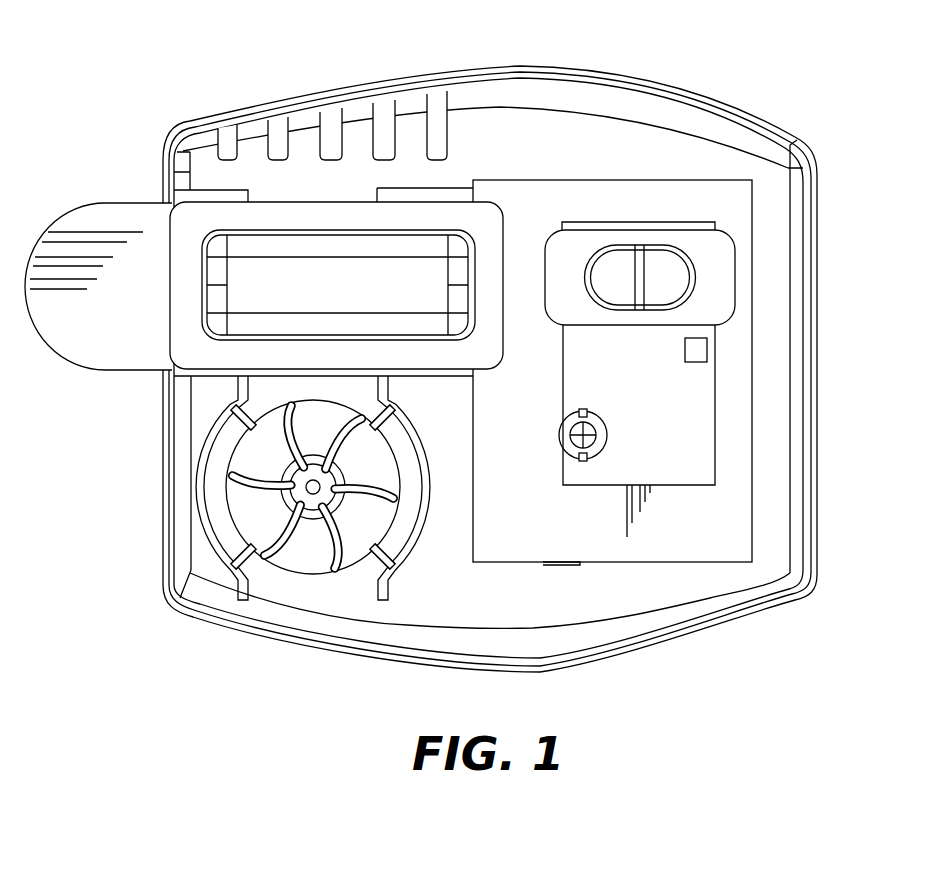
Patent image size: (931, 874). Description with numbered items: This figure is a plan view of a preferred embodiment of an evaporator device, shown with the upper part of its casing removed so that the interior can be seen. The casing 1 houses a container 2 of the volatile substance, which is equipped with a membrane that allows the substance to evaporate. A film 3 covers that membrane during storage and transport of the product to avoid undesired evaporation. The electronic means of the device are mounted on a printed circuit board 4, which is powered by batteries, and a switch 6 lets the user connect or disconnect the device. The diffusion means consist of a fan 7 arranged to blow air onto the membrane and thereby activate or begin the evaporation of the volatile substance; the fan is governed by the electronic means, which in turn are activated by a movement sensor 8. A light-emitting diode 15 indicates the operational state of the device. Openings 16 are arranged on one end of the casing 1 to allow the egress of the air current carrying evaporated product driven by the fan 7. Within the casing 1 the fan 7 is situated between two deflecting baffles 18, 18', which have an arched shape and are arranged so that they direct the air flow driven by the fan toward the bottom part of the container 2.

The casing 1 is at (808, 226).
The container 2 is at (292, 268).
The film 3 is at (107, 230).
The printed circuit board 4 is at (675, 460).
The switch 6 is at (665, 272).
The fan 7 is at (288, 543).
The movement sensor 8 is at (697, 353).
The light-emitting diode 15 is at (590, 458).
The openings 16 is at (435, 110).
The deflecting baffle 18 is at (161, 488).
The deflecting baffle 18' is at (401, 546).